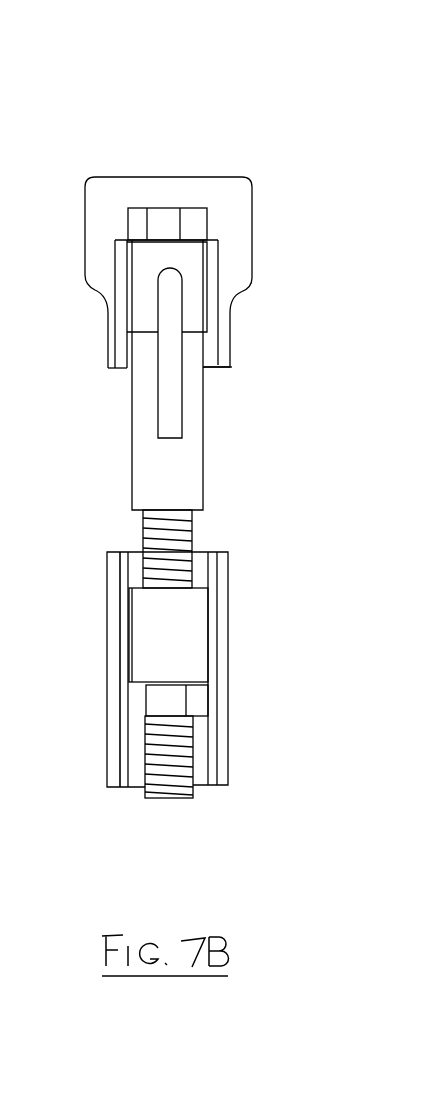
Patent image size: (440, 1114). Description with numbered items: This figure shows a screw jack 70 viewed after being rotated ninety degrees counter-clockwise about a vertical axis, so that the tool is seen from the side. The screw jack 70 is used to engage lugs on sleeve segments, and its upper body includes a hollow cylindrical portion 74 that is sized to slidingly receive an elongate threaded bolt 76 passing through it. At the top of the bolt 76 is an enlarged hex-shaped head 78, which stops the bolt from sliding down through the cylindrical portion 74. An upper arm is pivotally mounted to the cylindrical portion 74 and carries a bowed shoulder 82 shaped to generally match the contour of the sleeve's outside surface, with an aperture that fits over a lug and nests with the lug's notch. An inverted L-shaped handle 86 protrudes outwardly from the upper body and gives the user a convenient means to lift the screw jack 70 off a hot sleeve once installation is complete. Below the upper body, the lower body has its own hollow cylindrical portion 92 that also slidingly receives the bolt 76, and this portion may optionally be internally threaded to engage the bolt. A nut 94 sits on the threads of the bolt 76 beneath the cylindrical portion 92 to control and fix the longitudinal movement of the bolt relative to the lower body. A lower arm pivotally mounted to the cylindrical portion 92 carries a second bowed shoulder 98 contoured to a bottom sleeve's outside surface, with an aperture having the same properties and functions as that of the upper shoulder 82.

The screw jack 70 is at (178, 126).
The hollow cylindrical portion 74 is at (145, 423).
The elongate threaded bolt 76 is at (145, 528).
The hex-shaped head 78 is at (187, 222).
The bowed shoulder 82 is at (230, 235).
The inverted L-shaped handle 86 is at (168, 373).
The hollow cylindrical portion 92 is at (147, 620).
The nut 94 is at (142, 698).
The bowed shoulder 98 is at (108, 767).